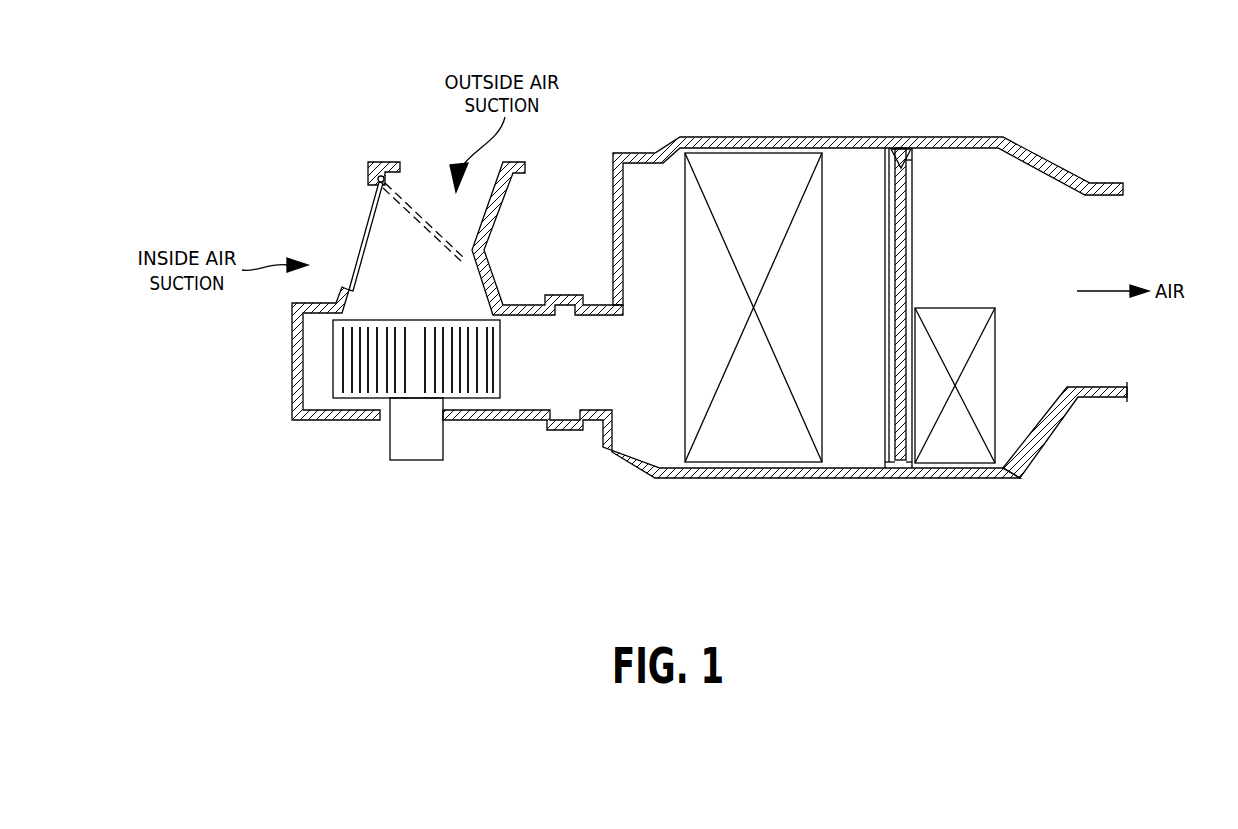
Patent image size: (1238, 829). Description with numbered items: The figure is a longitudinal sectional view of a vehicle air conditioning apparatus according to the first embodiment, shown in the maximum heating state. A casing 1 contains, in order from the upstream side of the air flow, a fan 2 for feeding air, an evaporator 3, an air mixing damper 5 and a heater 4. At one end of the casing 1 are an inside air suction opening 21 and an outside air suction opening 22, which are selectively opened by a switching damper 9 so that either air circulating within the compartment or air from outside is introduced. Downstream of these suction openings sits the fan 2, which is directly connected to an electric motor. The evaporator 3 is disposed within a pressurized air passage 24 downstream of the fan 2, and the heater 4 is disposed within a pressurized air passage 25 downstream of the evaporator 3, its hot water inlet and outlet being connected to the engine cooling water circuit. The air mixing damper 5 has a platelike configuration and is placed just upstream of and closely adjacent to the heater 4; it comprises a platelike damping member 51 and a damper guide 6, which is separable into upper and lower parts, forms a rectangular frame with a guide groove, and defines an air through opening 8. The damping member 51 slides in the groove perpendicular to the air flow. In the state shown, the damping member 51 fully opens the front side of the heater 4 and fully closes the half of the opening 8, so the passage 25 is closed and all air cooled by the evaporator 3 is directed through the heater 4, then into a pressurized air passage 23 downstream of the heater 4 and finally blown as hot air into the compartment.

The casing 1 is at (677, 140).
The fan 2 is at (343, 400).
The evaporator 3 is at (680, 435).
The heater 4 is at (953, 443).
The air mixing damper 5 is at (913, 193).
The damper guide 6 is at (901, 152).
The air through opening 8 is at (877, 440).
The switching damper 9 is at (363, 225).
The inside air suction opening 21 is at (342, 278).
The outside air suction opening 22 is at (413, 207).
The pressurized air passage 23 is at (1100, 342).
The pressurized air passage 24 is at (665, 407).
The pressurized air passage 25 is at (867, 262).
The platelike damping member 51 is at (910, 173).